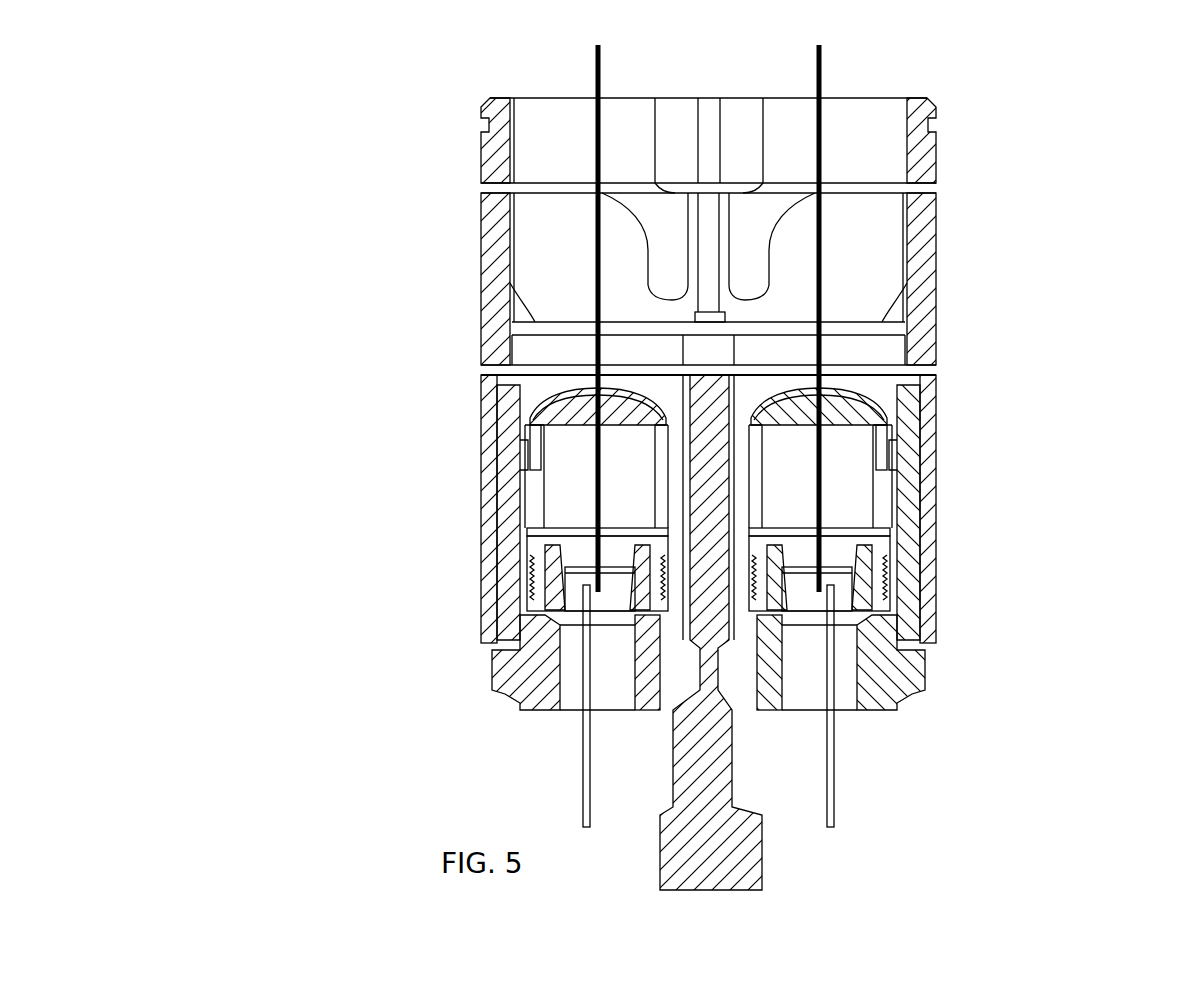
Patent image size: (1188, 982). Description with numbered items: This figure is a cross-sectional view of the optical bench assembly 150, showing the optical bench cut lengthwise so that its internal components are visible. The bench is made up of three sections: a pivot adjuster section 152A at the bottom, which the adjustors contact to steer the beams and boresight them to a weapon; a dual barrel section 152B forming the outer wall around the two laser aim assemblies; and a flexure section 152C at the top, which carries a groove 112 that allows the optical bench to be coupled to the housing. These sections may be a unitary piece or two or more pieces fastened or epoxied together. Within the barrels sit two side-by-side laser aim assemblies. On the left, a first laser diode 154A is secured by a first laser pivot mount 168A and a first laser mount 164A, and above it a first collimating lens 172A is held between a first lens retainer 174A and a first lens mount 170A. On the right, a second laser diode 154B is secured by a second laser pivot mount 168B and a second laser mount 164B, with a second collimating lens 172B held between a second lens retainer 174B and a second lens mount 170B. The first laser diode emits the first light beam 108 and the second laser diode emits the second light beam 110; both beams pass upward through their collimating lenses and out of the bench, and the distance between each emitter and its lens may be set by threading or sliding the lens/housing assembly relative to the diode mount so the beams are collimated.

The first light beam 108 is at (590, 55).
The second light beam 110 is at (822, 55).
The groove 112 is at (936, 126).
The optical bench assembly 150 is at (315, 271).
The pivot adjuster section 152A is at (765, 855).
The dual barrel section 152B is at (930, 523).
The flexure section 152C is at (938, 158).
The first laser diode 154A is at (535, 592).
The second laser diode 154B is at (893, 617).
The first laser mount 164A is at (540, 548).
The second laser mount 164B is at (890, 543).
The first laser pivot mount 168A is at (525, 712).
The second laser pivot mount 168B is at (900, 713).
The first lens mount 170A is at (522, 412).
The second lens mount 170B is at (930, 412).
The first collimating lens 172A is at (525, 400).
The second collimating lens 172B is at (845, 393).
The first lens retainer 174A is at (525, 484).
The second lens retainer 174B is at (908, 486).